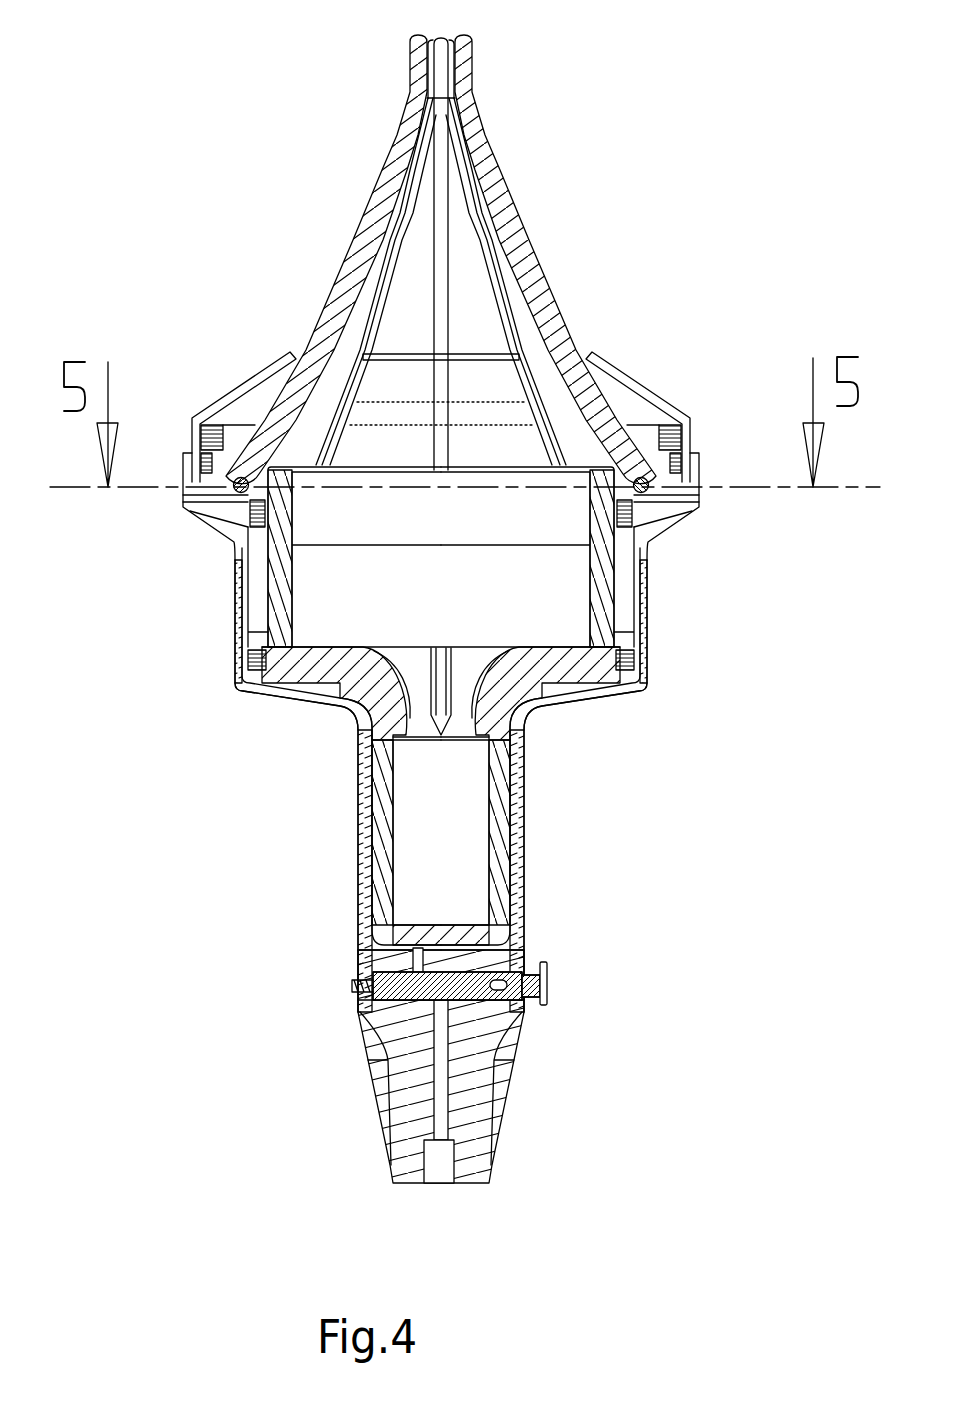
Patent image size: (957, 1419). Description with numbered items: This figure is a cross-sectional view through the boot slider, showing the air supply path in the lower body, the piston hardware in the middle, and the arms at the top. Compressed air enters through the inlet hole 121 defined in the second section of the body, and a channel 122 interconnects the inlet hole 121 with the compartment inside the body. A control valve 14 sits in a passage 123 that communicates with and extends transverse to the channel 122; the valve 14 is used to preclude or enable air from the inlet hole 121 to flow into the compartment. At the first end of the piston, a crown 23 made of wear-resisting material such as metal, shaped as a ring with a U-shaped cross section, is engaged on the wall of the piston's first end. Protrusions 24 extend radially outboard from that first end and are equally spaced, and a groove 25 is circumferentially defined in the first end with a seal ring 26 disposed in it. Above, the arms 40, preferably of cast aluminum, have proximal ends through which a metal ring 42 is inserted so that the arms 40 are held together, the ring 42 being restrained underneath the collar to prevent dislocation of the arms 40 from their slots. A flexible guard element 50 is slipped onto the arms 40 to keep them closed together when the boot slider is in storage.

The arms 40 is at (515, 246).
The flexible guard element 50 is at (657, 405).
The ring 42 is at (650, 470).
The crown 23 is at (622, 508).
The protrusions 24 is at (632, 638).
The groove 25 is at (633, 659).
The seal ring 26 is at (632, 690).
The control valve 14 is at (548, 978).
The passage 123 is at (540, 992).
The channel 122 is at (440, 1068).
The inlet hole 121 is at (448, 1157).